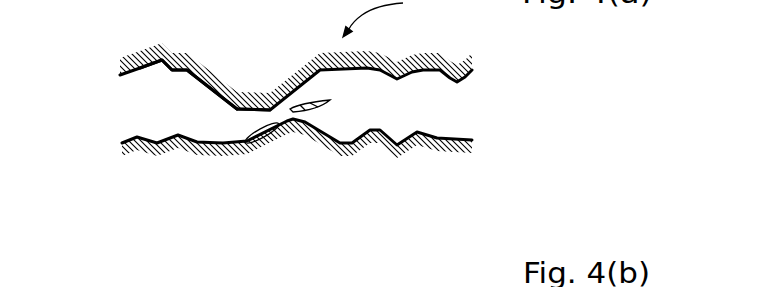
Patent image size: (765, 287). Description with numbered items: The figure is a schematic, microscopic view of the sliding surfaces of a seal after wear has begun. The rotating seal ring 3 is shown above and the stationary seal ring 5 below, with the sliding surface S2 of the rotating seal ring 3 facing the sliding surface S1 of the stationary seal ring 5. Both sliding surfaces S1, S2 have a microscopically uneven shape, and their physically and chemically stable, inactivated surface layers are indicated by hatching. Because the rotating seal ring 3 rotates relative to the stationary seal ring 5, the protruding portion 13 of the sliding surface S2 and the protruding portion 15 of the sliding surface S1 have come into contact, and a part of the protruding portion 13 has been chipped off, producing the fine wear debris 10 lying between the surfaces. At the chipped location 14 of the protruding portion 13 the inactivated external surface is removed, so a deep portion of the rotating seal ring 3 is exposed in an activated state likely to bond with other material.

The rotating seal ring 3 is at (382, 145).
The stationary seal ring 5 is at (416, 164).
The wear debris 10 is at (300, 113).
The protruding portion 13 is at (238, 111).
The chipped location 14 is at (262, 111).
The protruding portion 15 is at (248, 142).
The sliding surface S1 is at (322, 130).
The sliding surface S2 is at (370, 69).